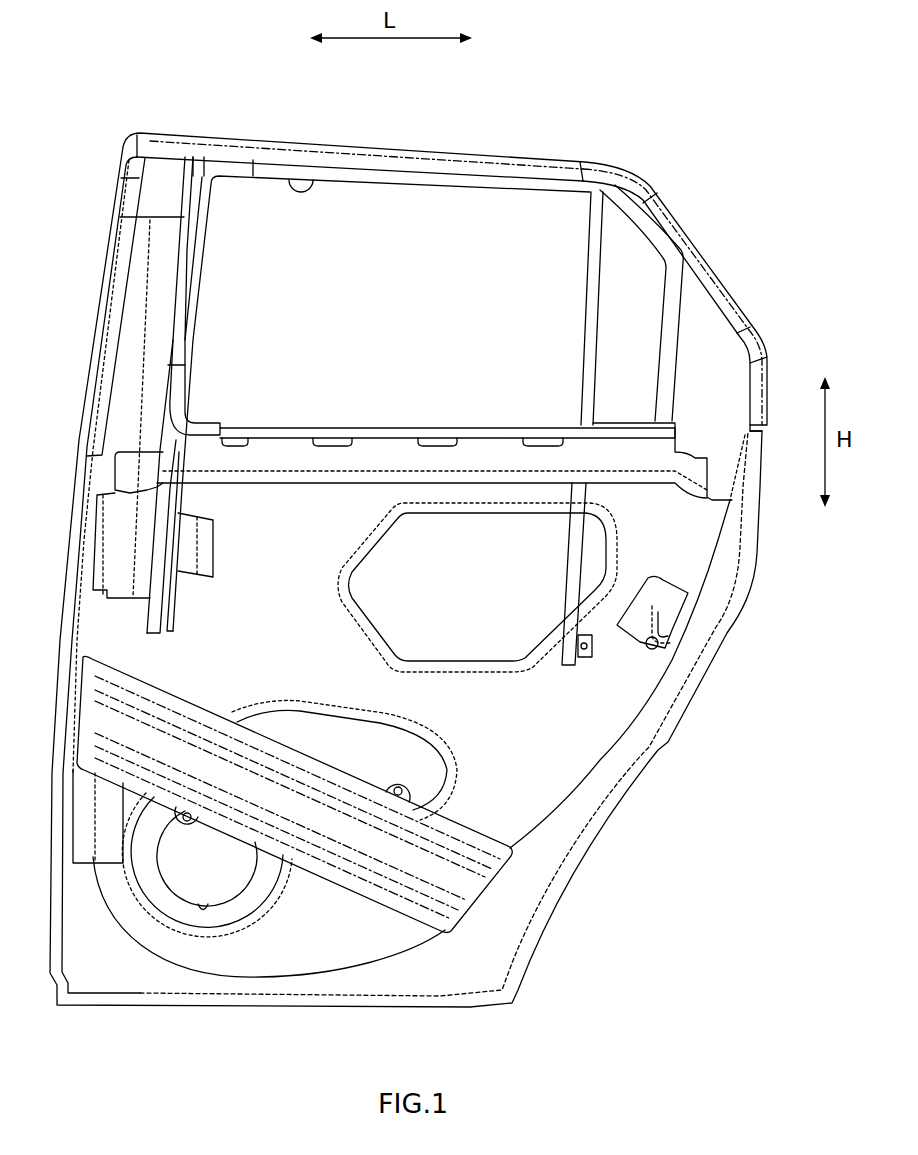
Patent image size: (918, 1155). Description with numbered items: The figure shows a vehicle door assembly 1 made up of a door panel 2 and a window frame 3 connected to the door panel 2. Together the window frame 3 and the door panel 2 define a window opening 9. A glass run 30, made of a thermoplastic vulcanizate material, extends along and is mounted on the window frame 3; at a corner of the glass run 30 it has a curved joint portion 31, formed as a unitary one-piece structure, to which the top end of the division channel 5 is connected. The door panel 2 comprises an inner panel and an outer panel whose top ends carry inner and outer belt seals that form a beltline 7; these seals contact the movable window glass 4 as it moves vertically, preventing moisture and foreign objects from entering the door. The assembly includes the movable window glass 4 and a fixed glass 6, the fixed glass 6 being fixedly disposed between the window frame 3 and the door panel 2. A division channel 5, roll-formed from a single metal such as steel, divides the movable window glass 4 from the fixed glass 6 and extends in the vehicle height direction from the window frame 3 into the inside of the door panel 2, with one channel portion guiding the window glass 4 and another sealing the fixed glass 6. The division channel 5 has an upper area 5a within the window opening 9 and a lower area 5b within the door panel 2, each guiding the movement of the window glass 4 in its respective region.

The vehicle door assembly 1 is at (415, 515).
The door panel 2 is at (728, 707).
The window frame 3 is at (517, 155).
The glass run 30 is at (432, 147).
The joint portion 31 is at (632, 168).
The movable window glass 4 is at (365, 207).
The division channel 5 is at (551, 337).
The upper area 5a is at (590, 267).
The lower area 5b is at (572, 563).
The fixed glass 6 is at (643, 290).
The beltline 7 is at (356, 412).
The window opening 9 is at (290, 178).